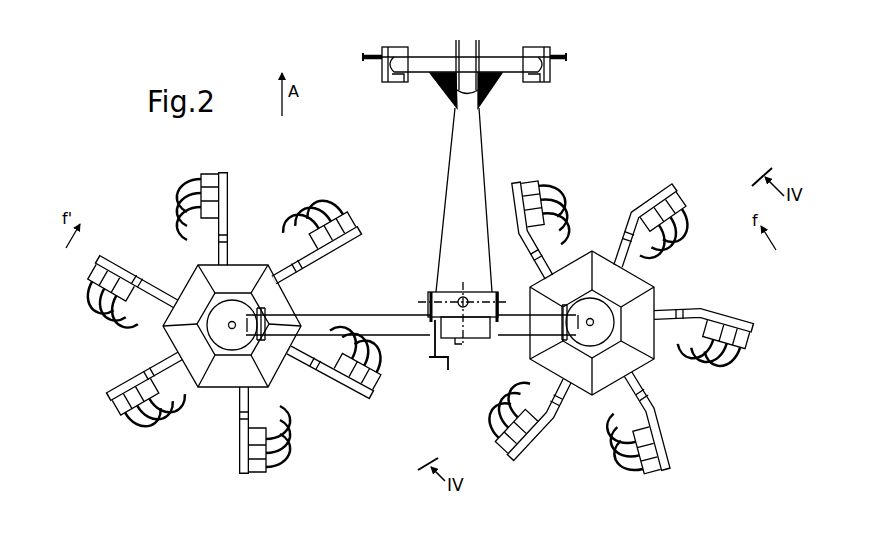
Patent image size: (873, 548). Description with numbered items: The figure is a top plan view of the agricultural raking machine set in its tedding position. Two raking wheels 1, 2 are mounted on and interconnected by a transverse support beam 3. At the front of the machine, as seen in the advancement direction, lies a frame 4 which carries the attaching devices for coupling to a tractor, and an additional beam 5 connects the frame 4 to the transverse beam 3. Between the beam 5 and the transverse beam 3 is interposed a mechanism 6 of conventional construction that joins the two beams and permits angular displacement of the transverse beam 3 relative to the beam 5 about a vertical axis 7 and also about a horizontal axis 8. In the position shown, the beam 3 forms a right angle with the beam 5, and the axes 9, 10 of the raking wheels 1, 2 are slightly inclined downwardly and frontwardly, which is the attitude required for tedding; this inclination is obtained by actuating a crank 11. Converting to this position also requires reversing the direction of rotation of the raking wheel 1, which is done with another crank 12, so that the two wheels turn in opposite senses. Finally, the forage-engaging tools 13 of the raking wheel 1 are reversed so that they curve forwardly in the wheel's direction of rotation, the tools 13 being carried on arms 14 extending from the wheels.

The raking wheel 1 is at (251, 259).
The raking wheel 2 is at (580, 253).
The support beam 3 is at (344, 315).
The frame 4 is at (421, 63).
The additional beam 5 is at (455, 189).
The mechanism 6 is at (436, 289).
The vertical axis 7 is at (465, 296).
The horizontal axis 8 is at (501, 304).
The axis of raking wheel 9 is at (229, 329).
The axis of raking wheel 10 is at (593, 329).
The crank 11 is at (441, 357).
The crank 12 is at (459, 343).
The forage-engaging tools 13 is at (166, 182).
The tine arms 14 is at (218, 253).